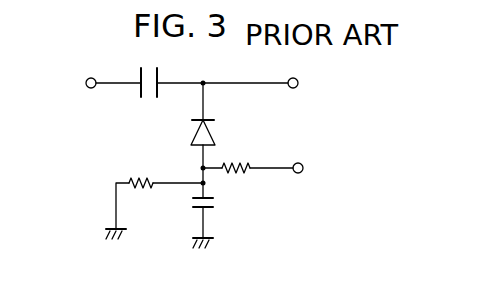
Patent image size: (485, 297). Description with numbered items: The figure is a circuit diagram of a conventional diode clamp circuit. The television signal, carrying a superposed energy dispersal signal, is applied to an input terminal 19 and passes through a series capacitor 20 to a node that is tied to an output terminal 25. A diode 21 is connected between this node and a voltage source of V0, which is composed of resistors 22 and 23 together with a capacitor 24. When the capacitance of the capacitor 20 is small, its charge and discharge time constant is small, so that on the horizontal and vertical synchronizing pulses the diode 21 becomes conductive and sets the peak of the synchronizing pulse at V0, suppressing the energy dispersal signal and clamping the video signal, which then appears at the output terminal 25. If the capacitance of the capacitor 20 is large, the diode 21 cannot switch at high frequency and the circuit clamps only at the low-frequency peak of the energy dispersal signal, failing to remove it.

The input terminal 19 is at (93, 89).
The capacitor 20 is at (149, 98).
The diode 21 is at (214, 134).
The resistor 22 is at (238, 172).
The resistor 23 is at (146, 179).
The capacitor 24 is at (193, 204).
The output terminal 25 is at (298, 86).